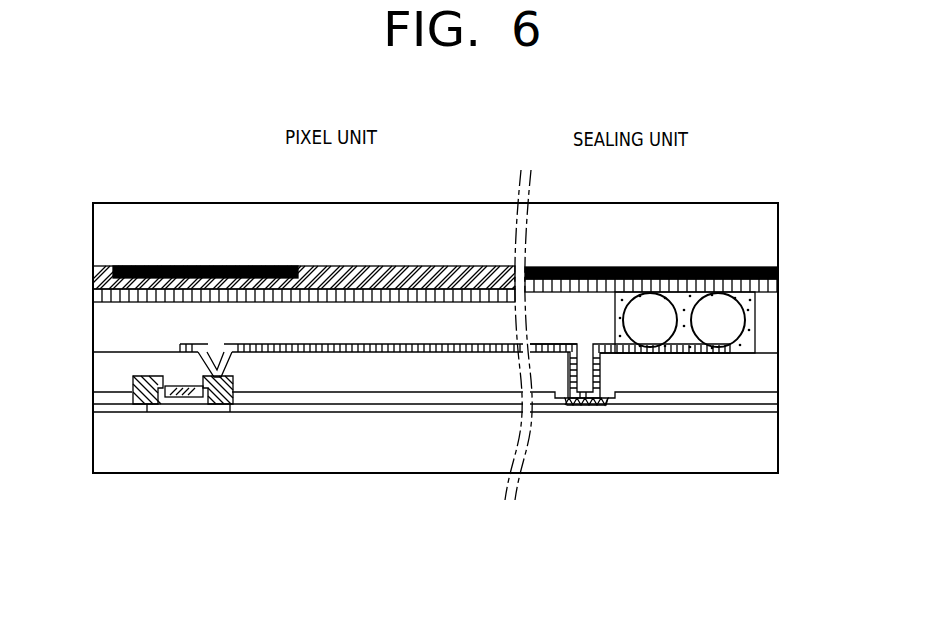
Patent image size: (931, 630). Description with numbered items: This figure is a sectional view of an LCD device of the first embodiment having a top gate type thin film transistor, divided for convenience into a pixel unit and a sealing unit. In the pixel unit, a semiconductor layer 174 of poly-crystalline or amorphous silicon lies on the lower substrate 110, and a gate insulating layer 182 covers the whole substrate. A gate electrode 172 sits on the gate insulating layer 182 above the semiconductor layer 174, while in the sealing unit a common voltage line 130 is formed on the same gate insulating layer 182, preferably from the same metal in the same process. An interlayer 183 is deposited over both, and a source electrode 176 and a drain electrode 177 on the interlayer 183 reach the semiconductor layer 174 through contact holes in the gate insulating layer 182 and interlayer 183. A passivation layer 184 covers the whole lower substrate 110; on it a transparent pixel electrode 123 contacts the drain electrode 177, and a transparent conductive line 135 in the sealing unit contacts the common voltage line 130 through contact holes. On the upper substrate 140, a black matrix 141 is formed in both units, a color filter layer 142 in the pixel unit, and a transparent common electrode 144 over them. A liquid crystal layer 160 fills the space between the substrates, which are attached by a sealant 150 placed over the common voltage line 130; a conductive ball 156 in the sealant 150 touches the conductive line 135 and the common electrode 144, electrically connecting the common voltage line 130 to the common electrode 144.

The lower substrate 110 is at (776, 441).
The pixel electrode 123 is at (459, 355).
The common voltage line 130 is at (592, 406).
The conductive line 135 is at (548, 354).
The upper substrate 140 is at (776, 241).
The black matrix 141 is at (272, 266).
The color filter layer 142 is at (396, 267).
The common electrode 144 is at (467, 289).
The sealant 150 is at (752, 342).
The conductive ball 156 is at (745, 318).
The liquid crystal layer 160 is at (98, 324).
The gate electrode 172 is at (184, 398).
The semiconductor layer 174 is at (157, 410).
The source electrode 176 is at (136, 404).
The drain electrode 177 is at (228, 402).
The gate insulating layer 182 is at (97, 405).
The interlayer 183 is at (98, 394).
The passivation layer 184 is at (98, 367).